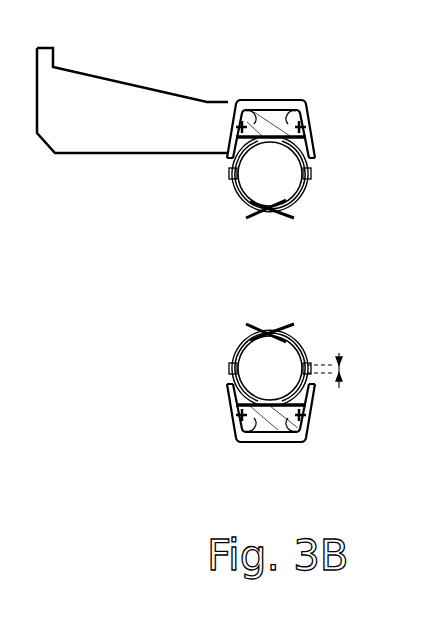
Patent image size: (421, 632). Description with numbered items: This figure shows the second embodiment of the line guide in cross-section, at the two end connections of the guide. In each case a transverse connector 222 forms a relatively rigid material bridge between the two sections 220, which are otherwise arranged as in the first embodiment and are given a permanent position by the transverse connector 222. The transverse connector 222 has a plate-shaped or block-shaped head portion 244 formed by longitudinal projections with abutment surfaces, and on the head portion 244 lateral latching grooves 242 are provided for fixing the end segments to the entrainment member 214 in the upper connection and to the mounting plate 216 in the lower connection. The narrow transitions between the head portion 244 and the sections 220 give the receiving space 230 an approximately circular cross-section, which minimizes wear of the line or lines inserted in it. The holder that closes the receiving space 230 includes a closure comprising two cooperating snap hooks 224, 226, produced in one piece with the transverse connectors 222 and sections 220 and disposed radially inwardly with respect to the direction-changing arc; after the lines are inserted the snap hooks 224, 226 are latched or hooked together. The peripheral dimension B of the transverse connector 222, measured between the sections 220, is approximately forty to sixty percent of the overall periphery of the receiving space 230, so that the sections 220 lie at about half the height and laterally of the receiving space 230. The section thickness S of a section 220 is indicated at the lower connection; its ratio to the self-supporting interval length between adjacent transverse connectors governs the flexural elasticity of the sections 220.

The entrainment member 214 is at (95, 102).
The mounting plate 216 is at (300, 433).
The sections 220 is at (232, 177).
The transverse connectors 222 is at (270, 100).
The snap hook 224 is at (240, 196).
The snap hook 226 is at (300, 197).
The receiving space 230 is at (292, 185).
The lateral latching grooves 242 is at (250, 122).
The head portion 244 is at (278, 112).
The peripheral dimension B is at (308, 137).
The section thickness S is at (343, 377).